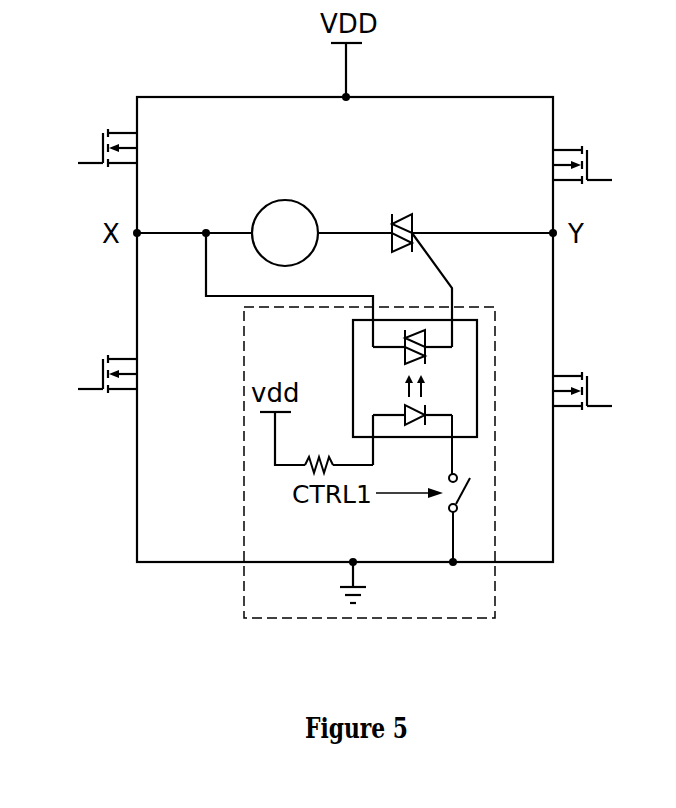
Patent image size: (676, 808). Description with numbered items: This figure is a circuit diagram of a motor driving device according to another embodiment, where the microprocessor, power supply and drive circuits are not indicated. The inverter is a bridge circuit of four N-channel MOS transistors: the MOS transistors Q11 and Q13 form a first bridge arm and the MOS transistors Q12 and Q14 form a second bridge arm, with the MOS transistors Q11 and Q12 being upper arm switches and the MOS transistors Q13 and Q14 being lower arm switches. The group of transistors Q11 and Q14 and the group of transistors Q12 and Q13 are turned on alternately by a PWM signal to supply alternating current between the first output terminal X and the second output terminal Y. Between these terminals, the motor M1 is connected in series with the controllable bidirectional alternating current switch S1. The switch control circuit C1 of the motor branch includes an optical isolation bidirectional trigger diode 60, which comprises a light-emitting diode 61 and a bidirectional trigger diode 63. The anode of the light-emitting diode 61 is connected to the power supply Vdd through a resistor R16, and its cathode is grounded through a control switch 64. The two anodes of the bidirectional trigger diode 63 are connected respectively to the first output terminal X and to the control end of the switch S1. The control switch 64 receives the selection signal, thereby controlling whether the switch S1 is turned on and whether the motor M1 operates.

The optical isolation bidirectional trigger diode 60 is at (477, 427).
The light-emitting diode 61 is at (428, 422).
The bidirectional trigger diode 63 is at (430, 335).
The control switch 64 is at (466, 485).
The switch control circuit C1 is at (495, 578).
The MOS transistor Q11 is at (139, 148).
The MOS transistor Q12 is at (585, 165).
The MOS transistor Q13 is at (139, 374).
The MOS transistor Q14 is at (585, 391).
The motor M1 is at (285, 233).
The controllable bidirectional alternating current switch S1 is at (424, 226).
The resistor R16 is at (315, 449).